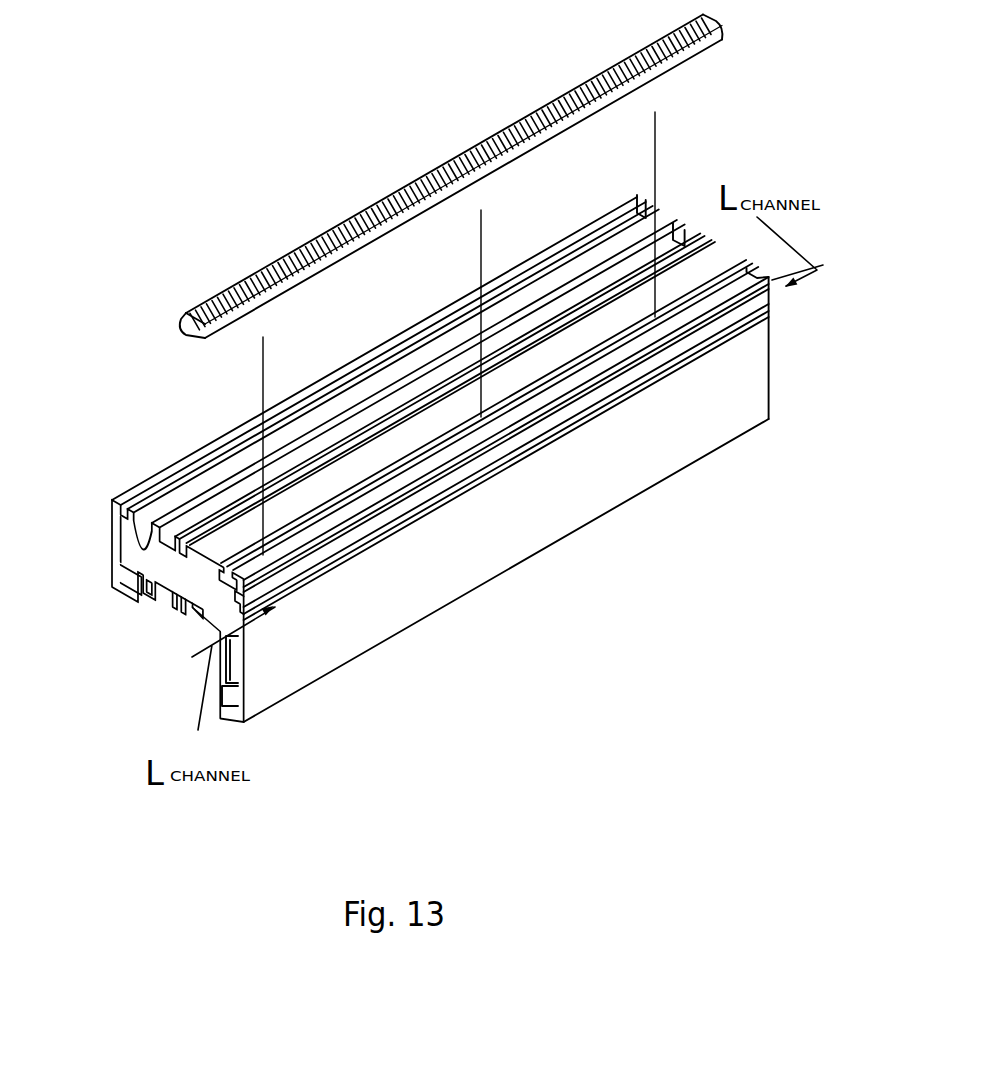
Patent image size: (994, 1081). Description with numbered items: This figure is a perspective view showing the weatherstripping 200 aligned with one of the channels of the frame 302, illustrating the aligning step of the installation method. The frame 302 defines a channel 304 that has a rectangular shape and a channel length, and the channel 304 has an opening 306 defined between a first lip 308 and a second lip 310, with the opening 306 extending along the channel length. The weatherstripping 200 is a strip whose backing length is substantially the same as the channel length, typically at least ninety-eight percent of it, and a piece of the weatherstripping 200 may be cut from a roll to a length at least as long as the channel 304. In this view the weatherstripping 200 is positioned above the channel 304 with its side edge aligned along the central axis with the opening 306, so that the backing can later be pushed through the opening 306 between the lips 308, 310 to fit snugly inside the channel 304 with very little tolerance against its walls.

The weatherstripping 200 is at (327, 153).
The frame 302 is at (418, 463).
The channel 304 is at (218, 560).
The opening 306 is at (343, 497).
The first lip 308 is at (203, 586).
The second lip 310 is at (230, 604).